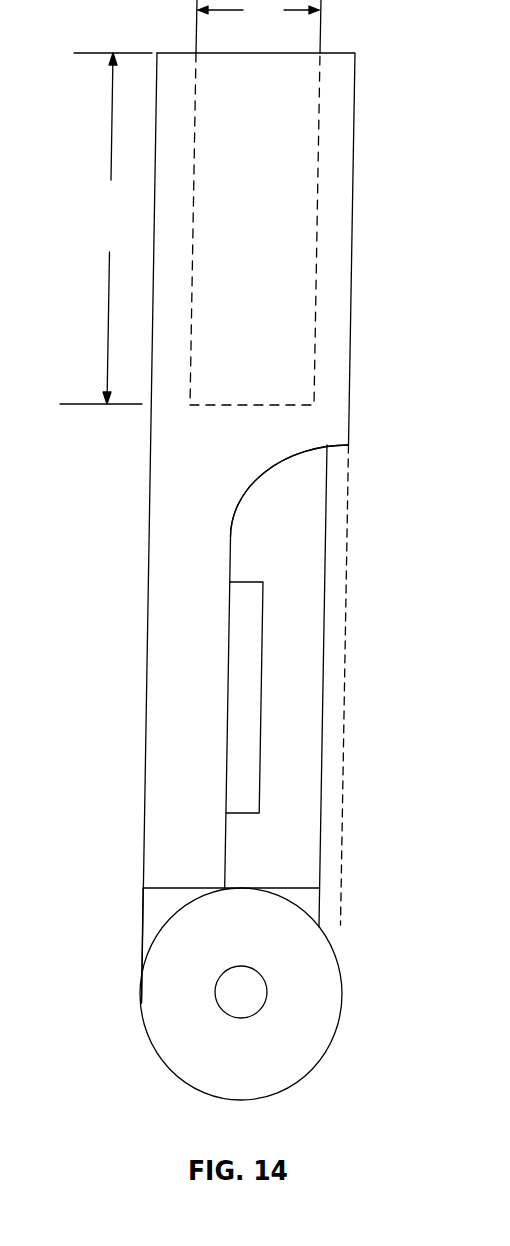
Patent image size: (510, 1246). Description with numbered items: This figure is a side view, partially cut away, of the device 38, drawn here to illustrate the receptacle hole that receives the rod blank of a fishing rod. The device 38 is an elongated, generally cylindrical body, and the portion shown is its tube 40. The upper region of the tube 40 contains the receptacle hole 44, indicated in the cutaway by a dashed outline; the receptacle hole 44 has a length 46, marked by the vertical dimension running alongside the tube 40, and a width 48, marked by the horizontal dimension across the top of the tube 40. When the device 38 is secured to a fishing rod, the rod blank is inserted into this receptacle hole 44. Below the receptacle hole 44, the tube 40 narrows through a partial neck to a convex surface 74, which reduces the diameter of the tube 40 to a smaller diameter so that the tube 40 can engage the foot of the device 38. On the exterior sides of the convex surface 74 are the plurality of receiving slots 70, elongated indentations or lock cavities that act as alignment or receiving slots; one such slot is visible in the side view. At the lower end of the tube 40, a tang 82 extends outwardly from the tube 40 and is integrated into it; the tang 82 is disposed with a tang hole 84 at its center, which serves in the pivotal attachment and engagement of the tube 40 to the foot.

The device 38 is at (123, 618).
The tube 40 is at (185, 452).
The receptacle hole 44 is at (286, 248).
The length 46 is at (106, 228).
The width 48 is at (258, 26).
The plurality of receiving slots 70 is at (245, 683).
The convex surface 74 is at (288, 520).
The tang 82 is at (308, 1023).
The tang hole 84 is at (248, 990).